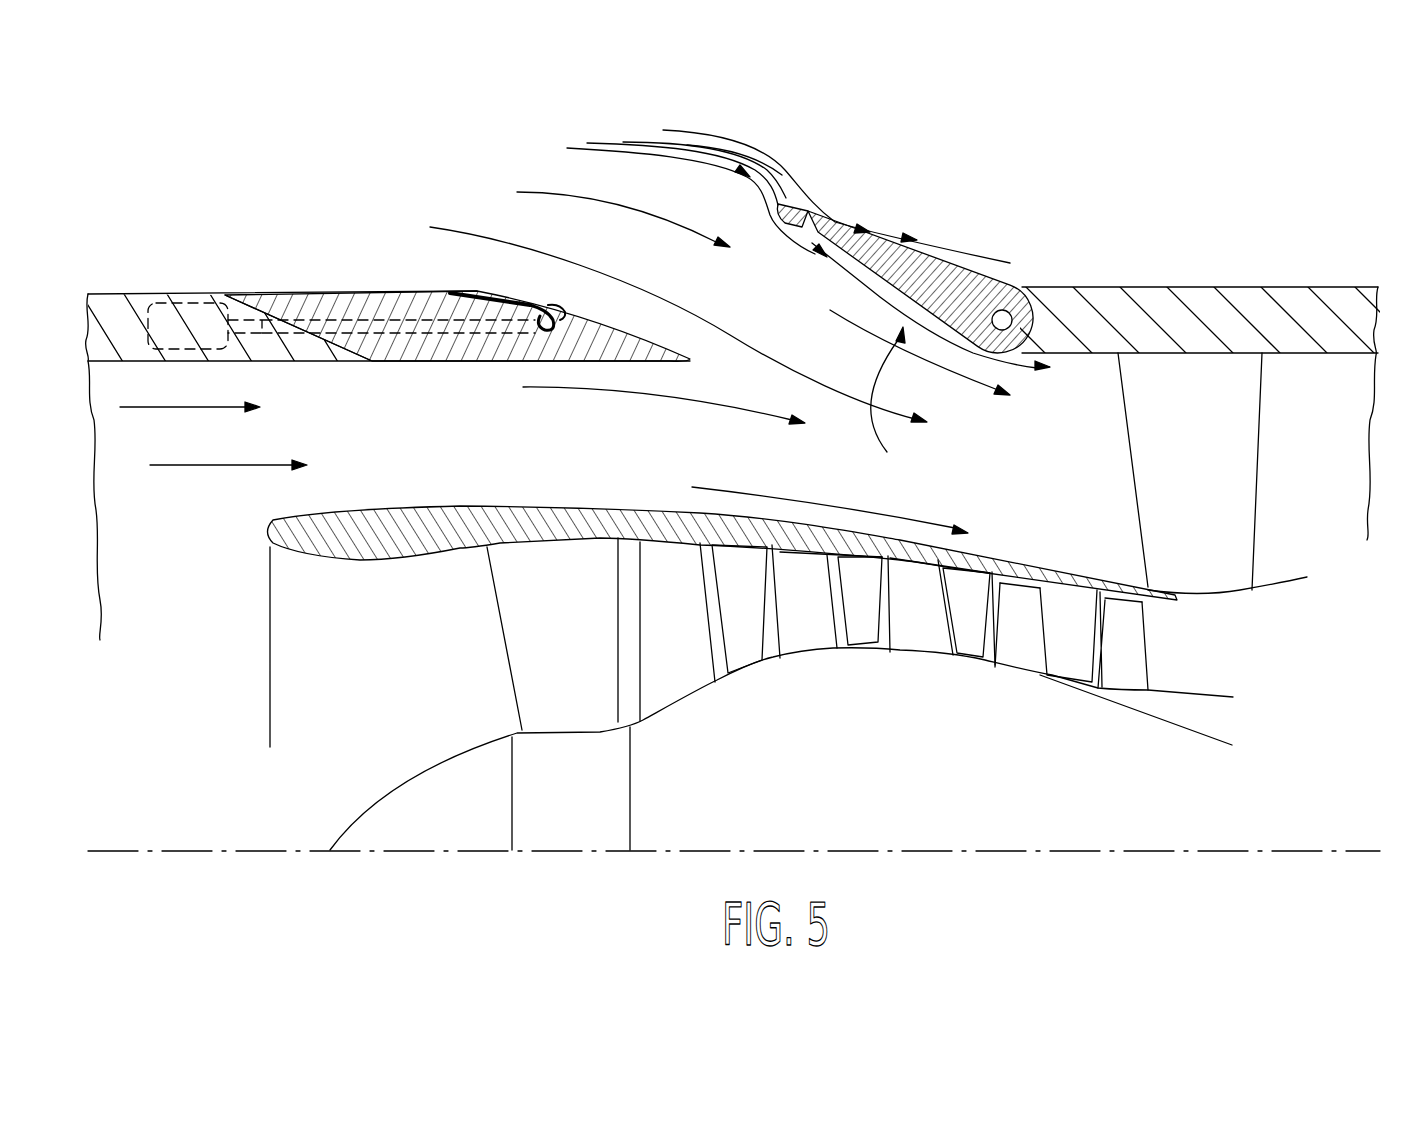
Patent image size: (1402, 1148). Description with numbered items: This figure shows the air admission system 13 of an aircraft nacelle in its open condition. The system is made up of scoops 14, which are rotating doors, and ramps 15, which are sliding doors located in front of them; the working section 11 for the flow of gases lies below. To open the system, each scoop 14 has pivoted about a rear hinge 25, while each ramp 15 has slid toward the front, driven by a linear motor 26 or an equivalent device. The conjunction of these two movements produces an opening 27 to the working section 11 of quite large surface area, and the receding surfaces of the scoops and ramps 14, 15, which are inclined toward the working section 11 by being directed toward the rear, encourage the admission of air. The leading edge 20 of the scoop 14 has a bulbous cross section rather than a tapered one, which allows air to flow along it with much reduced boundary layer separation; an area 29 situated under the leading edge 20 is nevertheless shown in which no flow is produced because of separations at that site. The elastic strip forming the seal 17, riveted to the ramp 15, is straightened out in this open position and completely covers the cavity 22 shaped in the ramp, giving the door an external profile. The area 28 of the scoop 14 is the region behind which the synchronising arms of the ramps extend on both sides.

The working section 11 is at (624, 458).
The air admission system 13 is at (785, 140).
The scoop 14 is at (974, 255).
The ramp 15 is at (405, 306).
The elastic strip 17 is at (533, 300).
The leading edge 20 is at (800, 196).
The cavity 22 is at (563, 313).
The rear hinge 25 is at (1011, 318).
The linear motor 26 is at (160, 303).
The opening 27 is at (887, 405).
The area 28 is at (527, 300).
The area 29 is at (800, 228).